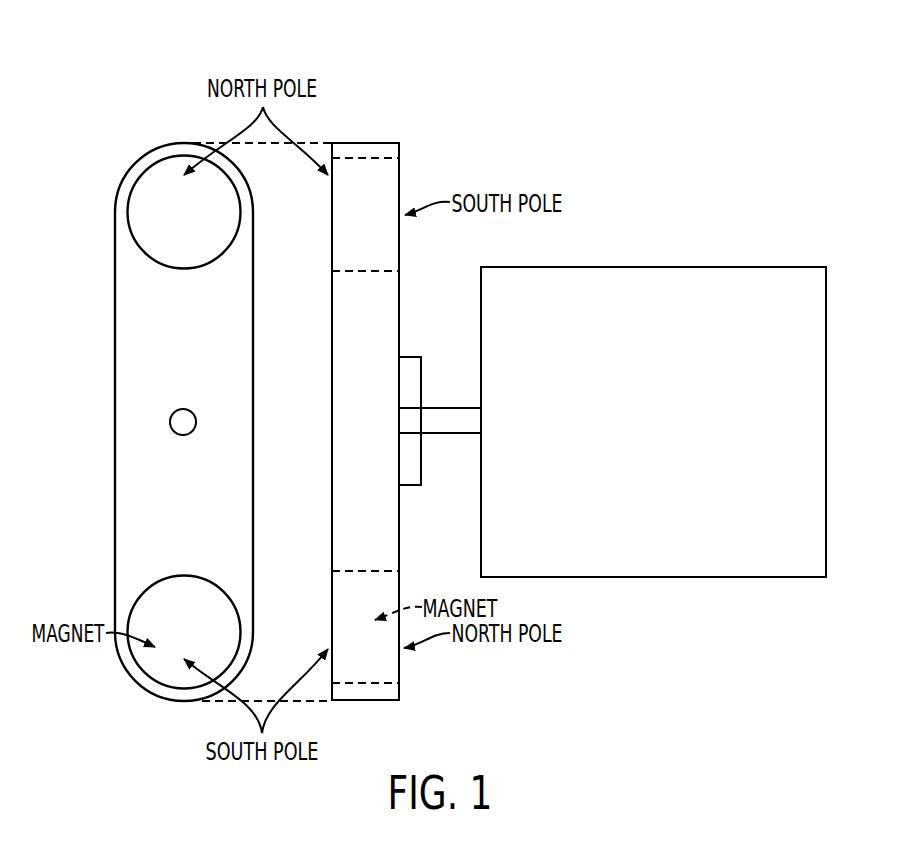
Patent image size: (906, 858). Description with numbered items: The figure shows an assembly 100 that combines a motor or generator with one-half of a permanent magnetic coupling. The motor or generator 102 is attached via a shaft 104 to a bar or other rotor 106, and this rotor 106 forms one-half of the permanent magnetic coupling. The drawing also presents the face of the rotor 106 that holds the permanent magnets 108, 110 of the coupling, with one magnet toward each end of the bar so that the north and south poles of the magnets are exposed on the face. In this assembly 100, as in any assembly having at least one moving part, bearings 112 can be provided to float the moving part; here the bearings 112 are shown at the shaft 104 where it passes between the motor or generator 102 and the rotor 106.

The assembly 100 is at (148, 84).
The motor or generator 102 is at (755, 266).
The shaft 104 is at (437, 405).
The rotor 106 is at (345, 425).
The permanent magnet 108 is at (225, 207).
The permanent magnet 110 is at (350, 627).
The bearings 112 is at (410, 487).